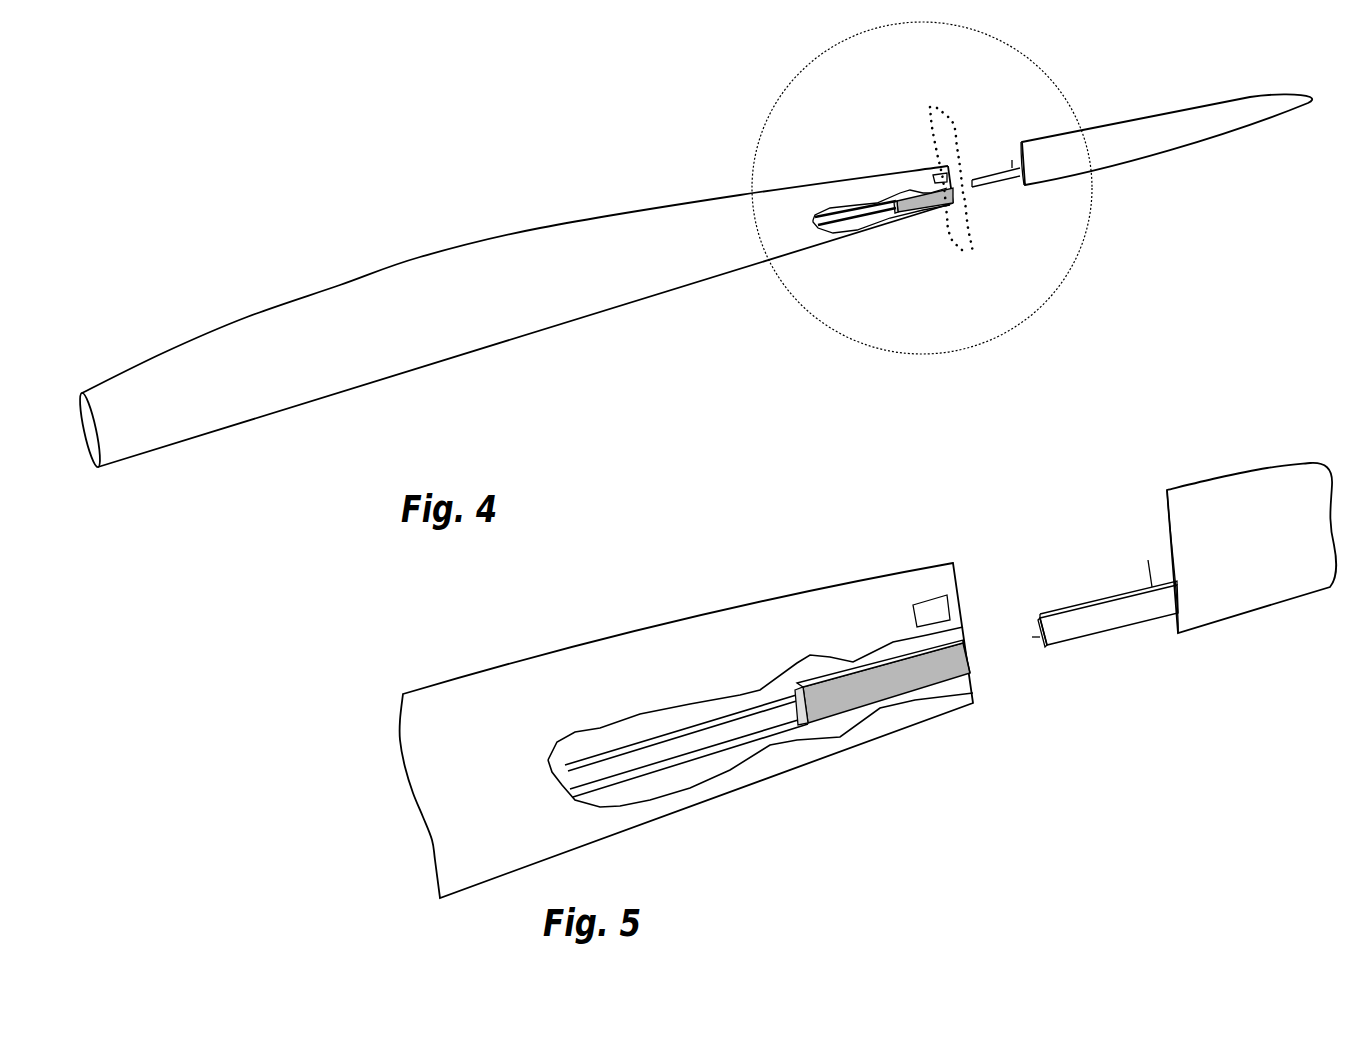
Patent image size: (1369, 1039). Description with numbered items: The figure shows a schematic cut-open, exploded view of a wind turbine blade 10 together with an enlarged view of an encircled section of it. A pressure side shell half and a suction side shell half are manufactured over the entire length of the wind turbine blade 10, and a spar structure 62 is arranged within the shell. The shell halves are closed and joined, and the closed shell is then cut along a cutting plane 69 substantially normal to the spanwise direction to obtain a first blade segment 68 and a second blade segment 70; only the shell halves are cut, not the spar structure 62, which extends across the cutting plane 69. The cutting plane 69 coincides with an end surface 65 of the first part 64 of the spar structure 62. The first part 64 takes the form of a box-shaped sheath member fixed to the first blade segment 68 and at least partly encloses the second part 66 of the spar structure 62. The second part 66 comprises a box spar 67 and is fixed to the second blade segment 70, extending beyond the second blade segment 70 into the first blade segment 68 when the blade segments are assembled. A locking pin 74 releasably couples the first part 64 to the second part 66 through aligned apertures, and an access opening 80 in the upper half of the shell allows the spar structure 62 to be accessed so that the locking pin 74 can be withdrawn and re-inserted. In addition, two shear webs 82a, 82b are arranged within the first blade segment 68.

In FIG. 4, the wind turbine blade 10 is at (461, 180).
In FIG. 4, the spar structure 62 is at (993, 218).
In FIG. 5, the spar structure 62 is at (1105, 650).
In FIG. 5, the first part of the spar structure 64 is at (884, 690).
In FIG. 5, the end surface 65 is at (973, 670).
In FIG. 5, the second part of the spar structure 66 is at (1105, 601).
In FIG. 5, the box spar 67 is at (1123, 612).
In FIG. 5, the first blade segment 68 is at (550, 683).
In FIG. 4, the cutting plane 69 is at (958, 233).
In FIG. 4, the second blade segment 70 is at (1172, 122).
In FIG. 5, the second blade segment 70 is at (1250, 478).
In FIG. 5, the locking pin 74 is at (1150, 585).
In FIG. 5, the access opening 80 is at (927, 607).
In FIG. 5, the first shear web 82a is at (684, 725).
In FIG. 5, the second shear web 82b is at (713, 748).